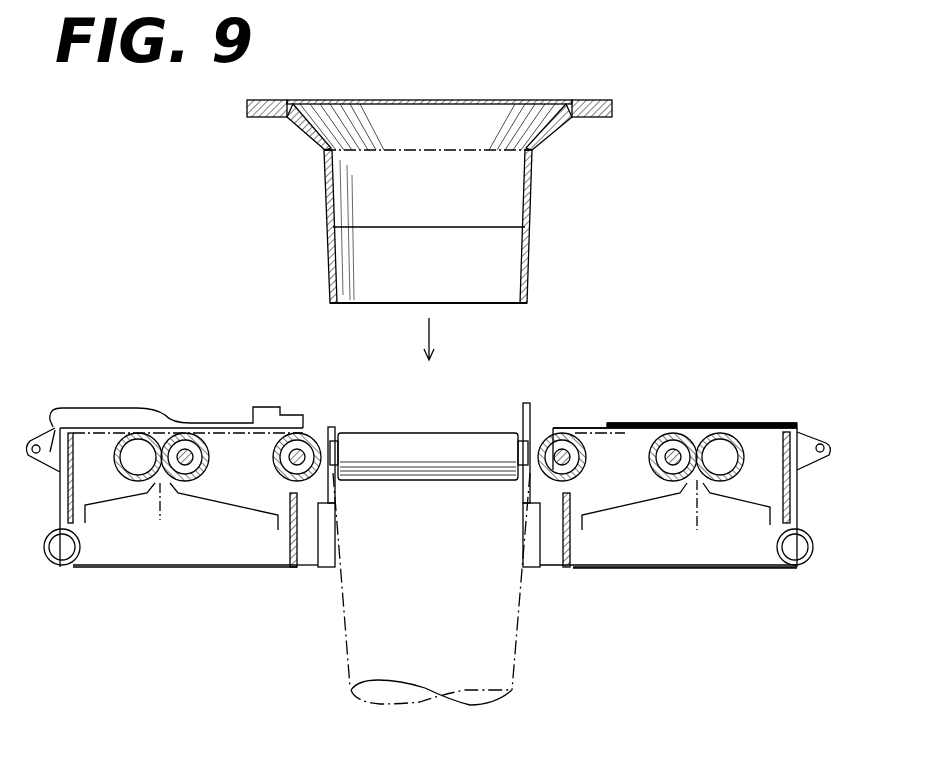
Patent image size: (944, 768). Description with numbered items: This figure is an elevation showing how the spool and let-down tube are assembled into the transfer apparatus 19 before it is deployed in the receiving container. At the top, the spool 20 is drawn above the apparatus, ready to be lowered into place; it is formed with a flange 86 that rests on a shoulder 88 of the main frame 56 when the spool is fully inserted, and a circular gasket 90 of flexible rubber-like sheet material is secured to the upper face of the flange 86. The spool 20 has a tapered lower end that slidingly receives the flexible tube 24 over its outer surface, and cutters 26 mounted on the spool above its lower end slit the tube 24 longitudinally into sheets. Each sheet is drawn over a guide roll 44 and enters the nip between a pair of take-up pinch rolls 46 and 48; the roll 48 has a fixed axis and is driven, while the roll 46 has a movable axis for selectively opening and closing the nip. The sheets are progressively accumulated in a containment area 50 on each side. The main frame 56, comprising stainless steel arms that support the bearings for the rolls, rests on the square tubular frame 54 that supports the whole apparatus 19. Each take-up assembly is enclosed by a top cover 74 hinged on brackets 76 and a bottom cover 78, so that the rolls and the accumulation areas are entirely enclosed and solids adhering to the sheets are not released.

The transfer apparatus 19 is at (688, 393).
The spool 20 is at (454, 205).
The flexible tube 24 is at (512, 636).
The cutters 26 is at (322, 503).
The guide roll 44 is at (605, 485).
The take-up pinch roll 46 is at (207, 453).
The take-up pinch roll 48 is at (125, 470).
The containment area 50 is at (210, 560).
The square frame 54 is at (60, 570).
The main frame 56 is at (573, 428).
The top cover 74 is at (747, 423).
The brackets 76 is at (830, 462).
The bottom cover 78 is at (753, 568).
The flange 86 is at (612, 117).
The shoulder 88 is at (267, 407).
The circular gasket 90 is at (544, 100).